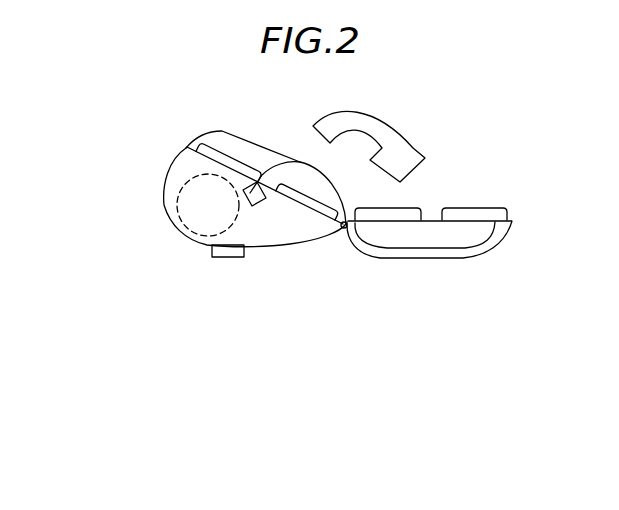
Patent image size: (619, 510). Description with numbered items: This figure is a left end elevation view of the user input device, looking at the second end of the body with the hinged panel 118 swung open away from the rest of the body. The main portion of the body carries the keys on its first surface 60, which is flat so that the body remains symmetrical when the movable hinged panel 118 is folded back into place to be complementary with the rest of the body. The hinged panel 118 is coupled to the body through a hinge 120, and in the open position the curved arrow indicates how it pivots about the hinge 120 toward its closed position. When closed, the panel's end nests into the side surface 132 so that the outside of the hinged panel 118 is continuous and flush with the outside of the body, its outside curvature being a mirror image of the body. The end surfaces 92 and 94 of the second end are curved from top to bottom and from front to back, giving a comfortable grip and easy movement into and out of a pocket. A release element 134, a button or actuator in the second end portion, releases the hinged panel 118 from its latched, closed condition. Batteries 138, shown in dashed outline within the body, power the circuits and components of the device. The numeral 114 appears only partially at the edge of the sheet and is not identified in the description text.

The first surface 60 is at (186, 148).
The side surface 132 is at (247, 152).
The release element 134 is at (300, 162).
The batteries 138 is at (183, 190).
The end surface 92 is at (203, 190).
The hinge 120 is at (336, 248).
The hinged panel 118 is at (500, 268).
The end surface 94 is at (420, 233).
The upper element 114 is at (117, 5).